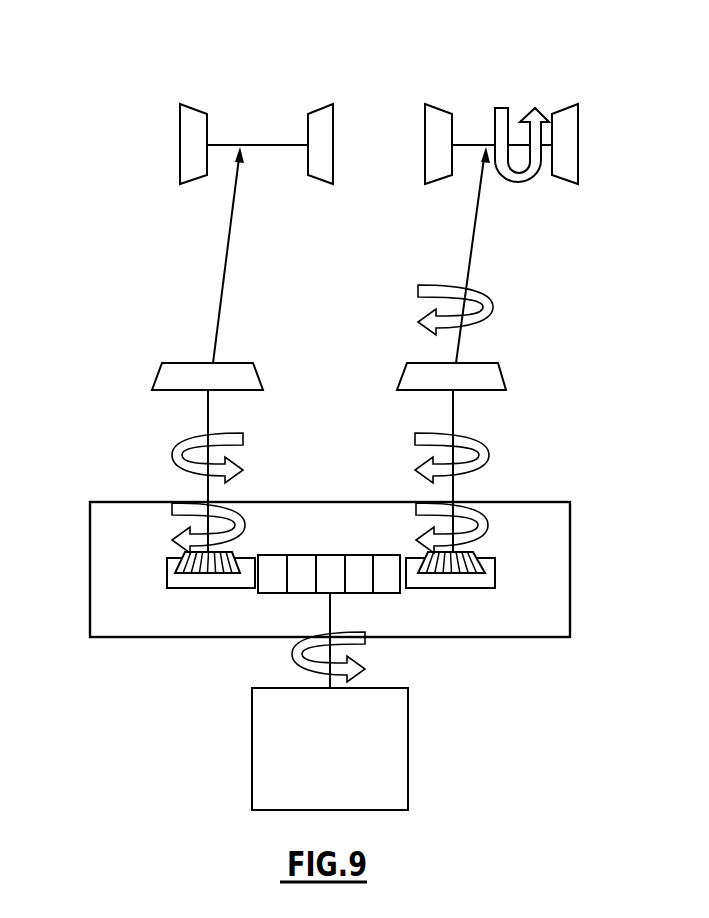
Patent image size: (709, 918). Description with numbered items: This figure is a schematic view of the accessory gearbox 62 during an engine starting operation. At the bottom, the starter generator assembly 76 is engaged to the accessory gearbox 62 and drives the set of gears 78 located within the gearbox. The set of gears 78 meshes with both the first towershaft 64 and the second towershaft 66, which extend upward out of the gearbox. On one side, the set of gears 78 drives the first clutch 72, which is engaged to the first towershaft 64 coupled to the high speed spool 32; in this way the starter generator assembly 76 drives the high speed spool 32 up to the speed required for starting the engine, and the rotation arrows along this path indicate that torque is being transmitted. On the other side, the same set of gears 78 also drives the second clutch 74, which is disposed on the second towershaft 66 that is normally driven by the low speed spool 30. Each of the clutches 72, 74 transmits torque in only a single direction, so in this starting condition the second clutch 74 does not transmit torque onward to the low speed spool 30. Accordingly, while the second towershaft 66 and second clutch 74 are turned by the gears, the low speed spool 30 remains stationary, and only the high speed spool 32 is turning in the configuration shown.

The low speed spool 30 is at (326, 80).
The high speed spool 32 is at (570, 78).
The accessory gearbox 62 is at (126, 621).
The first towershaft 64 is at (453, 413).
The second towershaft 66 is at (208, 413).
The first clutch 72 is at (478, 554).
The second clutch 74 is at (178, 566).
The starter generator assembly 76 is at (398, 714).
The set of gears 78 is at (345, 527).